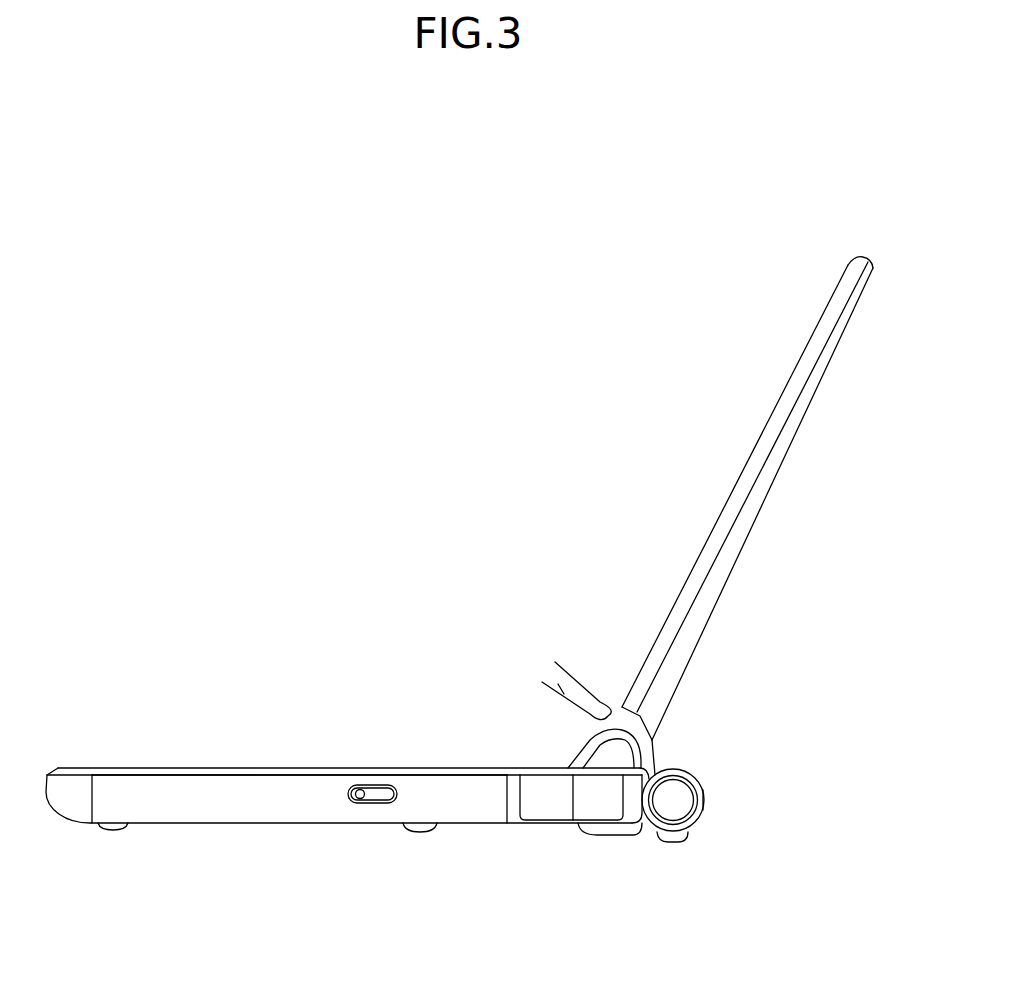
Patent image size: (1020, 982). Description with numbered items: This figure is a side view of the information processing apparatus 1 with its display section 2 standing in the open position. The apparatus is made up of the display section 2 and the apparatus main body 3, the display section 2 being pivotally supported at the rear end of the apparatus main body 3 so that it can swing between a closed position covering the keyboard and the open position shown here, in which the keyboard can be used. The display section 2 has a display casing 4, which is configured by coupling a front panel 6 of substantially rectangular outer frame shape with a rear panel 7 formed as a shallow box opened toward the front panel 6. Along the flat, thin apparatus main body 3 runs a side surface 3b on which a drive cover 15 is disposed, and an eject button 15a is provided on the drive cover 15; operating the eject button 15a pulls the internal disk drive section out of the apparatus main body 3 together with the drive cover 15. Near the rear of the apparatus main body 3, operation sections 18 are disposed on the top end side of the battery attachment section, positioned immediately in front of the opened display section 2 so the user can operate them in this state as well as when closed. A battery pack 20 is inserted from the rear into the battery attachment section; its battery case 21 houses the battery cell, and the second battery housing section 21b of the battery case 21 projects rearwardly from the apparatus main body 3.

The information processing apparatus 1 is at (309, 488).
The display section 2 is at (767, 480).
The apparatus main body 3 is at (72, 812).
The side surface 3b is at (538, 812).
The display casing 4 is at (708, 593).
The front panel 6 is at (722, 510).
The rear panel 7 is at (733, 547).
The drive cover 15 is at (227, 817).
The eject button 15a is at (373, 805).
The operation sections 18 is at (628, 750).
The battery pack 20 is at (657, 768).
The battery case 21 is at (648, 832).
The second battery housing section 21b is at (702, 790).